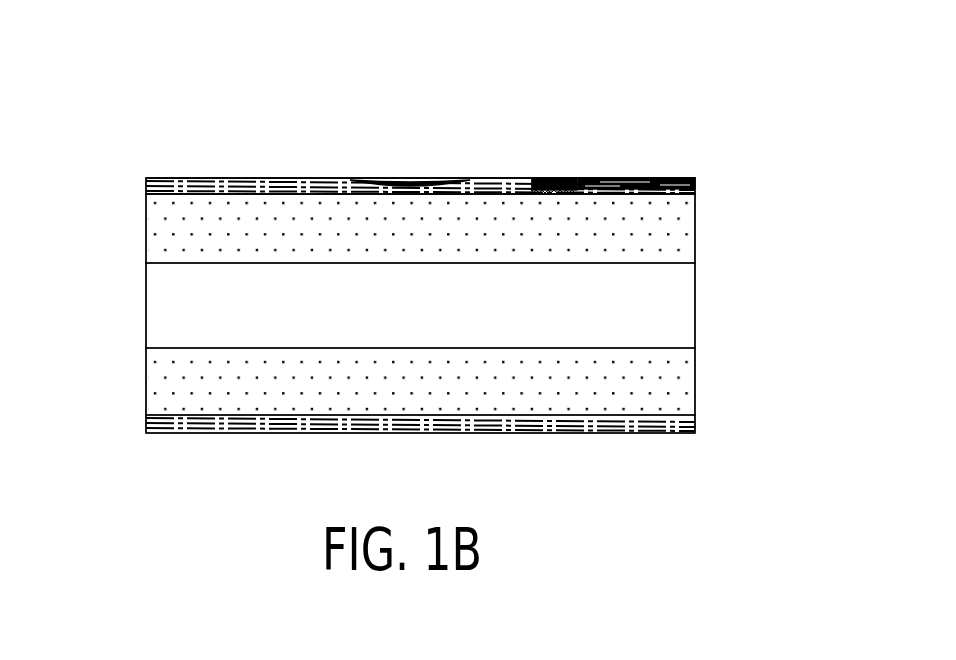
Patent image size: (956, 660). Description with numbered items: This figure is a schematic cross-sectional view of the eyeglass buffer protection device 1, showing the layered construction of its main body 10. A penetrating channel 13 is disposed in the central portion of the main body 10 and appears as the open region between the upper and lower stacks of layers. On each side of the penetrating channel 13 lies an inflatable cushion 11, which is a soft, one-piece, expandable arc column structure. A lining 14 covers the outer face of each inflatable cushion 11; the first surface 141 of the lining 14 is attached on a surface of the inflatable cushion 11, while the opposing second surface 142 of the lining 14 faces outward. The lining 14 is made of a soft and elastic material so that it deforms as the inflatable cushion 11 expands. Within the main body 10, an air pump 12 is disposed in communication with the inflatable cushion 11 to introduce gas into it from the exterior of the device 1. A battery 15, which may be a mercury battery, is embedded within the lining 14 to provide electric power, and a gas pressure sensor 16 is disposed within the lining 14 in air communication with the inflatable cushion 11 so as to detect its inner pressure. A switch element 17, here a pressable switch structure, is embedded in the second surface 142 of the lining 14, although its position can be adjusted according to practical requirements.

The eyeglass buffer protection device 1 is at (790, 80).
The main body 10 is at (192, 157).
The inflatable cushion 11 is at (682, 242).
The air pump 12 is at (608, 178).
The penetrating channel 13 is at (663, 317).
The lining 14 is at (156, 177).
The first surface 141 is at (203, 194).
The second surface 142 is at (235, 176).
The battery 15 is at (557, 178).
The gas pressure sensor 16 is at (527, 178).
The switch element 17 is at (405, 178).